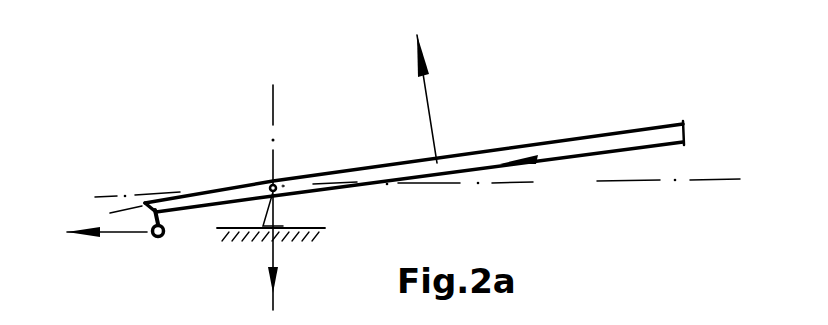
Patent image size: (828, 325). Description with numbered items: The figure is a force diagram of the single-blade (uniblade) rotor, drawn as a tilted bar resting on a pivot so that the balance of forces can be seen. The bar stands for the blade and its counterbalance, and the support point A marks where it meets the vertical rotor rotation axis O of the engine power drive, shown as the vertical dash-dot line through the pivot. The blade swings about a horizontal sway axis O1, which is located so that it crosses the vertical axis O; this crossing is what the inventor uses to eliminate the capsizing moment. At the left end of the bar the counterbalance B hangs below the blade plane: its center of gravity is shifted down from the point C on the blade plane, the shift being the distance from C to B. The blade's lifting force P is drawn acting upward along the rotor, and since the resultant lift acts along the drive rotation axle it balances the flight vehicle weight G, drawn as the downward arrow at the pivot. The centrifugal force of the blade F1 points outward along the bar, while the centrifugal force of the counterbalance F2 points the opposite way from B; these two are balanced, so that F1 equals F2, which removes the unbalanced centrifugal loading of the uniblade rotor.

The fulcrum pivot of lever A is at (271, 188).
The counterbalance B is at (164, 259).
The lever end / arm C is at (148, 197).
The rotor rotation axis / blade swing axle O is at (273, 113).
The horizontal sway axis O1 is at (284, 179).
The lifting force P is at (446, 95).
The flight vehicle weight G is at (296, 256).
The centrifugal force of the blade F1 is at (541, 179).
The centrifugal force of the counterbalance F2 is at (88, 235).